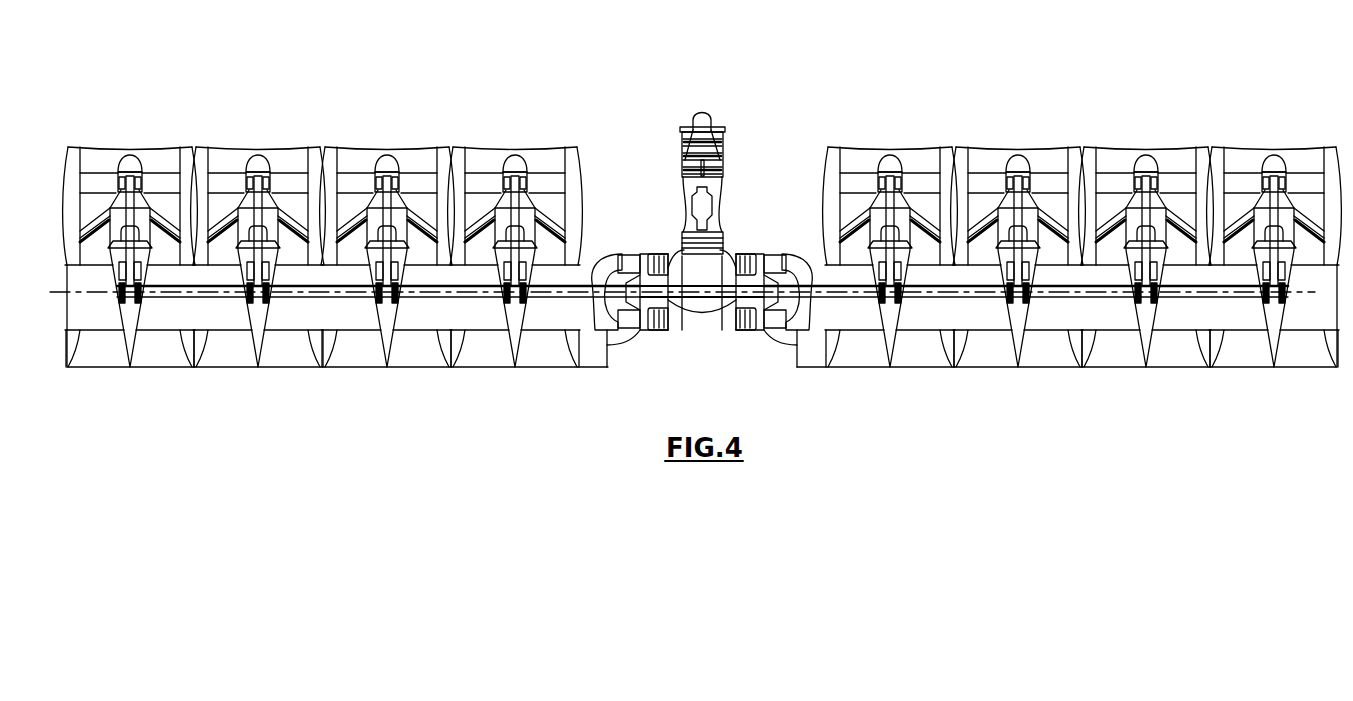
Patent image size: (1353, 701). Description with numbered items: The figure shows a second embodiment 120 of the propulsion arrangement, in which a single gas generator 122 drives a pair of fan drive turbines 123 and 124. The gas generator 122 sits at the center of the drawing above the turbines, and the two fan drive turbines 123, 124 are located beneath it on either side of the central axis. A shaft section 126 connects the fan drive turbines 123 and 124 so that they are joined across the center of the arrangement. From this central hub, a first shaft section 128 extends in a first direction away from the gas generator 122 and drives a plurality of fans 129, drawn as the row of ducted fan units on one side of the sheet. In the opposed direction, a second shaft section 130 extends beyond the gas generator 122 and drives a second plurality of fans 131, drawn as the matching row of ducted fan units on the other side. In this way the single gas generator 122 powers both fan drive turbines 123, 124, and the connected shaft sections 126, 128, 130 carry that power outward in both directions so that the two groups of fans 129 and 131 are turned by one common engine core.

The embodiment 120 is at (779, 97).
The gas generator 122 is at (725, 160).
The fan drive turbine 123 is at (638, 258).
The fan drive turbine 124 is at (750, 308).
The shaft section 126 is at (683, 302).
The first shaft section 128 is at (428, 297).
The fans 129 is at (304, 120).
The second shaft section 130 is at (932, 297).
The fans 131 is at (982, 124).